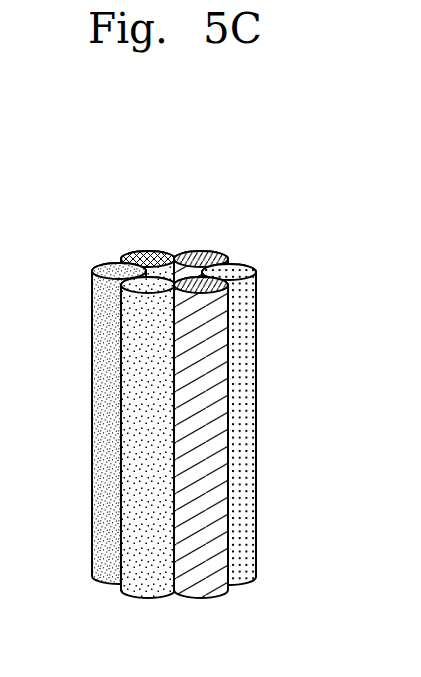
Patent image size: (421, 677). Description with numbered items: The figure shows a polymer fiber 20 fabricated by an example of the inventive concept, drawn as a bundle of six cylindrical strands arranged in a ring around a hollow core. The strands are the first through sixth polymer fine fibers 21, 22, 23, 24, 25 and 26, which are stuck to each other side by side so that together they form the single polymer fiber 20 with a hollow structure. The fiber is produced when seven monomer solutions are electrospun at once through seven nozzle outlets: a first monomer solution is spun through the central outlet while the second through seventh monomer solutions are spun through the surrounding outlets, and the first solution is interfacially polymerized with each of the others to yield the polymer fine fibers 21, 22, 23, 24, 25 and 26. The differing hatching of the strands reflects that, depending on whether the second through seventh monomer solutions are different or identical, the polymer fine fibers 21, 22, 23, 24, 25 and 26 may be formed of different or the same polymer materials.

The polymer fiber 20 is at (175, 367).
The first polymer fine fiber 21 is at (147, 283).
The second polymer fine fiber 22 is at (110, 267).
The third polymer fine fiber 23 is at (136, 257).
The fourth polymer fine fiber 24 is at (193, 258).
The fifth polymer fine fiber 25 is at (233, 264).
The sixth polymer fine fiber 26 is at (207, 387).